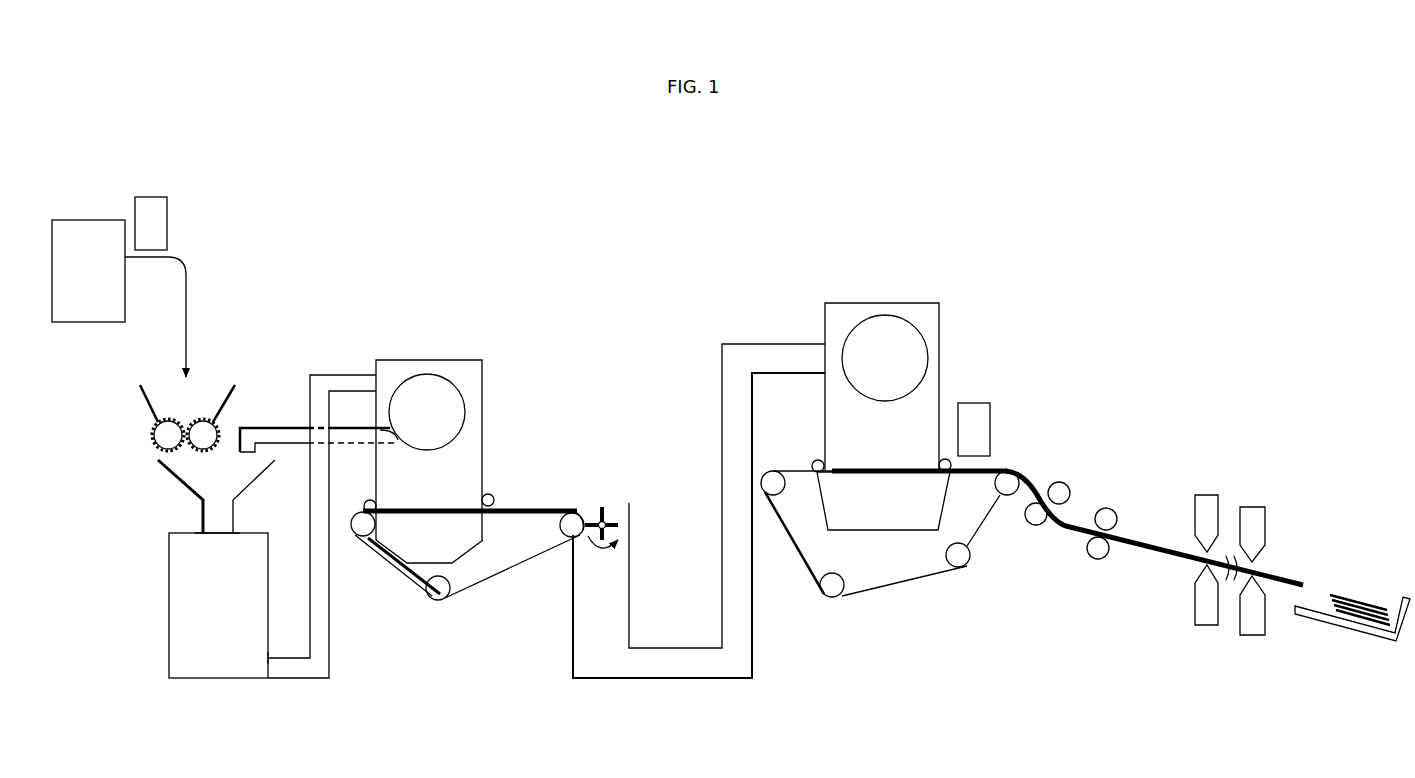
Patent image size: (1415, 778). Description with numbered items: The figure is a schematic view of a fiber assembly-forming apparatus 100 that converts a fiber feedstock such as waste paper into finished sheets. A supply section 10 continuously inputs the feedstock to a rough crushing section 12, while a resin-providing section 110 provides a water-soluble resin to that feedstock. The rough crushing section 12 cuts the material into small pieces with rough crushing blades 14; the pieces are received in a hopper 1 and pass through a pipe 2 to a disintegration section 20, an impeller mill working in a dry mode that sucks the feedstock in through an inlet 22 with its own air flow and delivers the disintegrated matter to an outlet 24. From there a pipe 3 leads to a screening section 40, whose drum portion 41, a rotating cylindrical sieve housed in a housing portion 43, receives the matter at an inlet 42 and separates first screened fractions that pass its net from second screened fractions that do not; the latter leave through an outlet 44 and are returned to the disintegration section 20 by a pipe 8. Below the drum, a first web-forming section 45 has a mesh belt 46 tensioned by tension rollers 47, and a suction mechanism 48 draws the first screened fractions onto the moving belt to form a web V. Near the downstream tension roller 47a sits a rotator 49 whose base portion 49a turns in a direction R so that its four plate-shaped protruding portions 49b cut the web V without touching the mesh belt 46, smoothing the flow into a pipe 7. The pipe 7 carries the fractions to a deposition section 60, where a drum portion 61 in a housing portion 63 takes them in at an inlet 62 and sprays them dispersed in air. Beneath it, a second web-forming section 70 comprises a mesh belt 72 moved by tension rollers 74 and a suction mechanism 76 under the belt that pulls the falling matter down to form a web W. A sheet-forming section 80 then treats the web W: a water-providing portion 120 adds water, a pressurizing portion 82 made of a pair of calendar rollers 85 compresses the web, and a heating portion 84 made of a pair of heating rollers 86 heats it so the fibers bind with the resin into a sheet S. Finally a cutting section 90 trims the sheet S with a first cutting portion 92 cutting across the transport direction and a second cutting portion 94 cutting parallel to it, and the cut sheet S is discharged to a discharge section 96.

The fiber assembly-forming apparatus 100 is at (1060, 232).
The supply section 10 is at (84, 207).
The resin-providing section 110 is at (147, 210).
The rough crushing section 12 is at (151, 409).
The rough crushing blades 14 is at (170, 437).
The hopper 1 is at (172, 480).
The pipe 2 is at (203, 517).
The pipe 3 is at (316, 520).
The disintegration section 20 is at (160, 688).
The inlet 22 is at (213, 540).
The outlet 24 is at (262, 662).
The pipe 8 is at (290, 435).
The screening section 40 is at (454, 437).
The drum portion 41 is at (465, 412).
The inlet 42 is at (472, 388).
The housing portion 43 is at (482, 388).
The outlet 44 is at (395, 430).
The web V is at (530, 508).
The first web-forming section 45 is at (462, 579).
The mesh belt 46 is at (485, 582).
The tension rollers 47 is at (360, 536).
The tension roller 47a is at (568, 540).
The suction mechanism 48 is at (420, 550).
The rotator 49 is at (616, 480).
The base portion 49a is at (570, 460).
The protruding portions 49b is at (600, 522).
The direction R is at (620, 549).
The pipe 7 is at (616, 594).
The deposition section 60 is at (929, 360).
The drum portion 61 is at (925, 348).
The inlet 62 is at (928, 327).
The housing portion 63 is at (939, 325).
The web W is at (905, 470).
The water-providing portion 120 is at (978, 427).
The second web-forming section 70 is at (892, 541).
The mesh belt 72 is at (815, 462).
The tension rollers 74 is at (773, 497).
The suction mechanism 76 is at (875, 510).
The sheet-forming section 80 is at (1105, 485).
The pressurizing portion 82 is at (1072, 499).
The heating portion 84 is at (1129, 533).
The calendar rollers 85 is at (1057, 485).
The heating rollers 86 is at (1104, 508).
The cutting section 90 is at (1255, 524).
The first cutting portion 92 is at (1205, 483).
The second cutting portion 94 is at (1269, 546).
The sheet S is at (1167, 545).
The discharge section 96 is at (1385, 643).